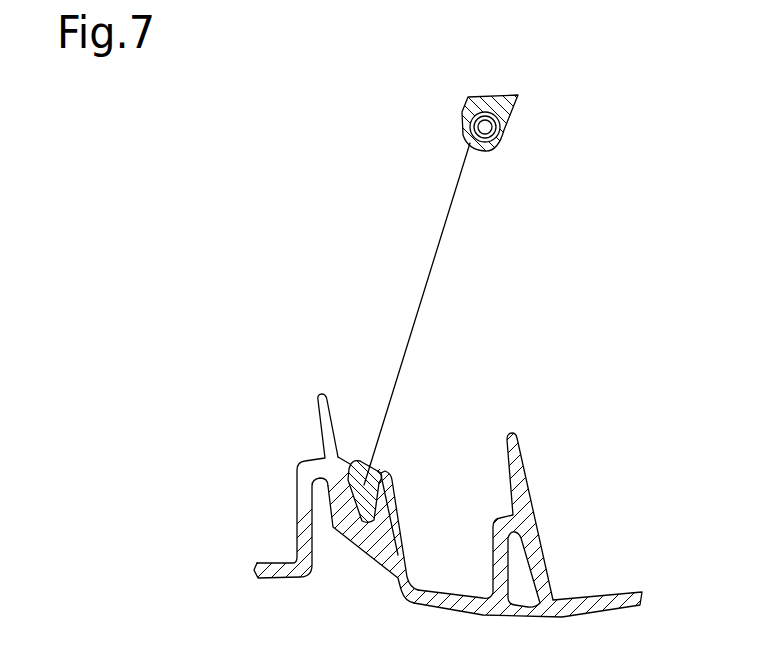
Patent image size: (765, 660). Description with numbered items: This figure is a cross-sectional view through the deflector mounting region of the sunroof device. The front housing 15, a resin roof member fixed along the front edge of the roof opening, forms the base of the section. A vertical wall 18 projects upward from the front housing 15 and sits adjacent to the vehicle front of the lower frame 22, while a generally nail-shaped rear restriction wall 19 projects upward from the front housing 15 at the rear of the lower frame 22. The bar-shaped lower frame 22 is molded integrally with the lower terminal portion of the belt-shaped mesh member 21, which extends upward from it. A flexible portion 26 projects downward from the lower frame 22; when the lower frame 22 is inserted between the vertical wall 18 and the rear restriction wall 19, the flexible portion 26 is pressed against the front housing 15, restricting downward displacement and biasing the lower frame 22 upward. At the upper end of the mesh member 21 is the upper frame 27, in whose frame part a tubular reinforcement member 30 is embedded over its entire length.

The front housing 15 is at (553, 511).
The vertical wall 18 is at (320, 393).
The rear restriction wall 19 is at (398, 508).
The mesh member 21 is at (427, 290).
The lower frame 22 is at (360, 458).
The flexible portion 26 is at (358, 543).
The upper frame 27 is at (515, 120).
The tubular reinforcement member 30 is at (474, 101).